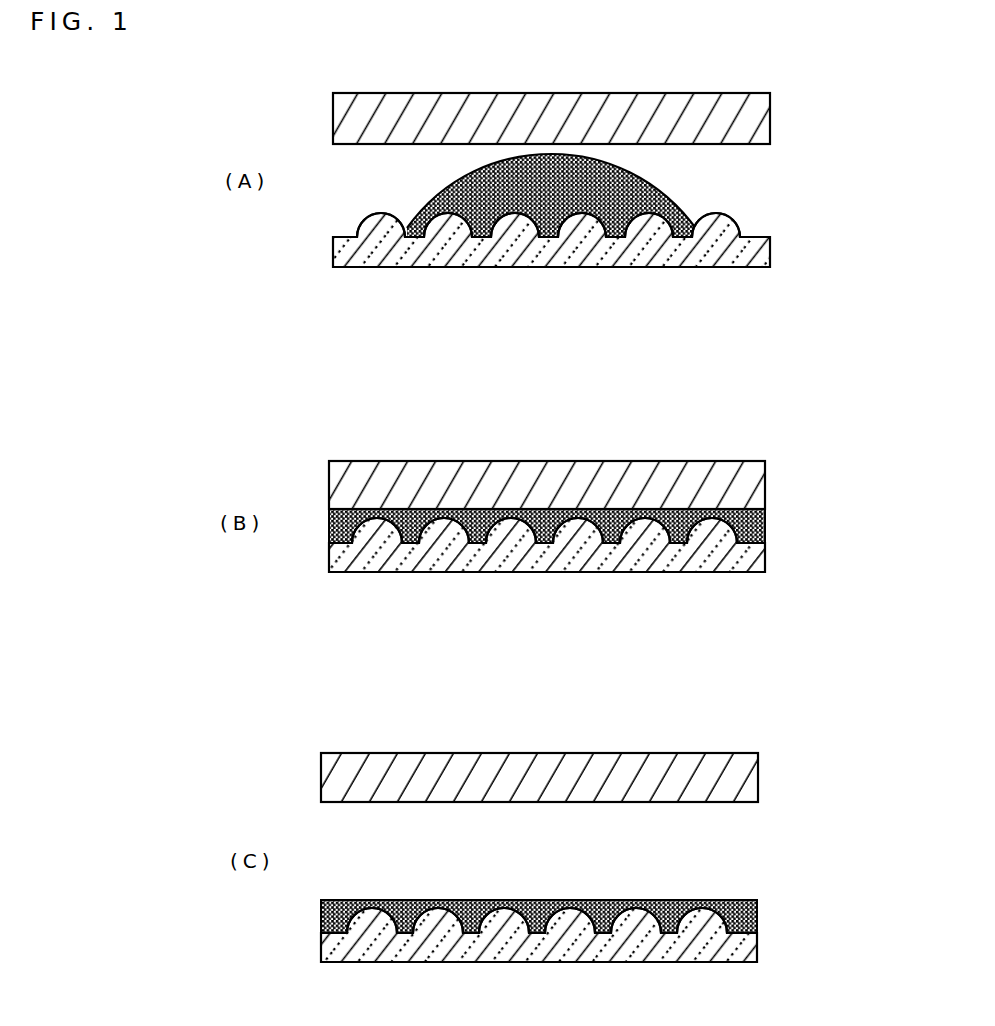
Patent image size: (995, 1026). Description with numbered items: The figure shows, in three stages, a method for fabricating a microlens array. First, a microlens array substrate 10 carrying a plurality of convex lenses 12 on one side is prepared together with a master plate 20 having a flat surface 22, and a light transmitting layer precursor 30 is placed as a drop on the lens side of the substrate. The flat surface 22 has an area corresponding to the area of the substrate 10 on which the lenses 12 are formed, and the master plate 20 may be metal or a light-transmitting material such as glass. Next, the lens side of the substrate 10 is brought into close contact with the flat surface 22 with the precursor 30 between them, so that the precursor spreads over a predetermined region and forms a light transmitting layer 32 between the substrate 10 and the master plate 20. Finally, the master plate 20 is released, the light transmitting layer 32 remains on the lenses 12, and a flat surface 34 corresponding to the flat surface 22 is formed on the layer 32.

The microlens array substrate 10 is at (765, 255).
The lenses 12 is at (733, 213).
The master plate 20 is at (766, 113).
The flat surface 22 is at (735, 153).
The light transmitting layer precursor 30 is at (650, 187).
The light transmitting layer 32 is at (752, 543).
The flat surface 34 is at (693, 898).